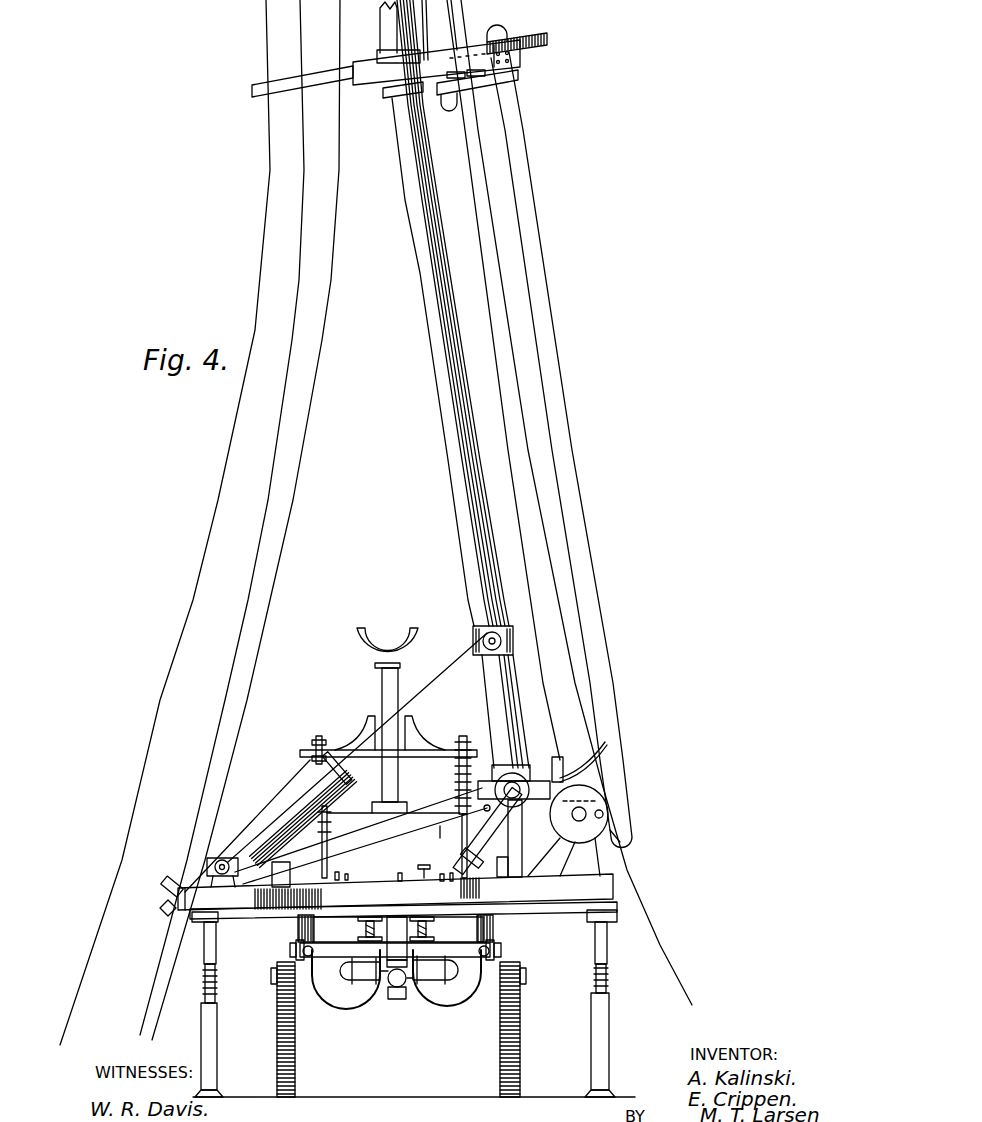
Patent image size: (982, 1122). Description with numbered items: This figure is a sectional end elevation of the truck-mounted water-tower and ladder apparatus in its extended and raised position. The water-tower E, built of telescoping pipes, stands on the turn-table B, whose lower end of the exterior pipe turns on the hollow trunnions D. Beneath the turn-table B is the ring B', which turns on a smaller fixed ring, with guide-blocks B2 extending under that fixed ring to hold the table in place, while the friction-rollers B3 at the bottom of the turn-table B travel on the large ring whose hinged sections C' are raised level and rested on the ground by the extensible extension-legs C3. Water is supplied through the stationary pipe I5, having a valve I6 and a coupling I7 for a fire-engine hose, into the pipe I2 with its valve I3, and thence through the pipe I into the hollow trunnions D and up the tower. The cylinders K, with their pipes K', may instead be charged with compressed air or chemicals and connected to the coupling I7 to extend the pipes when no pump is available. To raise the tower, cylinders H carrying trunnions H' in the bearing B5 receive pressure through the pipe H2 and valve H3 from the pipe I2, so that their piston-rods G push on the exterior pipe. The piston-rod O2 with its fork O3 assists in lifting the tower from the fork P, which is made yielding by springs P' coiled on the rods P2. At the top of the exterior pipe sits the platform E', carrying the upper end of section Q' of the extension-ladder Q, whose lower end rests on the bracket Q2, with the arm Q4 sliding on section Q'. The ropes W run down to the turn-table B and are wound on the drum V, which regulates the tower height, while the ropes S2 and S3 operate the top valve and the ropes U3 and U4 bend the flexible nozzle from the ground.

The rope U4 is at (175, 677).
The rope S2 is at (270, 483).
The rope S3 is at (299, 528).
The ropes W is at (531, 606).
The rope U3 is at (639, 889).
The extension-ladder Q is at (561, 450).
The ladder section Q' is at (510, 235).
The platform E' is at (399, 385).
The arm Q4 is at (462, 100).
The water-tower E is at (450, 327).
The piston-rods G is at (446, 686).
The cylinders H is at (310, 773).
The trunnions H' is at (247, 826).
The valve H3 is at (172, 886).
The pipe H2 is at (161, 907).
The bearing B5 is at (358, 837).
The fork O3 is at (406, 643).
The piston-rod O2 is at (382, 693).
The fork P is at (388, 733).
The springs P' is at (391, 807).
The rods P2 is at (408, 815).
The trunnions D is at (512, 782).
The guide-blocks B2 is at (522, 866).
The pipe I is at (480, 849).
The pipe I2 is at (366, 844).
The valve I3 is at (426, 868).
The drum V is at (608, 803).
The bracket Q2 is at (589, 752).
The friction-rollers B3 is at (250, 890).
The turn-table B is at (365, 893).
The hinged sections C' is at (403, 923).
The extension-legs C3 is at (210, 986).
The cylinders K is at (398, 1023).
The pipes K' is at (387, 986).
The coupling I7 is at (397, 1000).
The valve I6 is at (414, 985).
The ring B' is at (395, 936).
The stationary pipe I5 is at (362, 926).